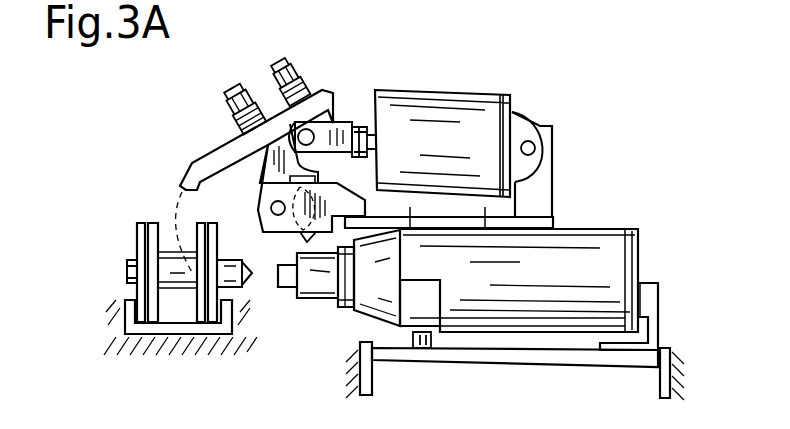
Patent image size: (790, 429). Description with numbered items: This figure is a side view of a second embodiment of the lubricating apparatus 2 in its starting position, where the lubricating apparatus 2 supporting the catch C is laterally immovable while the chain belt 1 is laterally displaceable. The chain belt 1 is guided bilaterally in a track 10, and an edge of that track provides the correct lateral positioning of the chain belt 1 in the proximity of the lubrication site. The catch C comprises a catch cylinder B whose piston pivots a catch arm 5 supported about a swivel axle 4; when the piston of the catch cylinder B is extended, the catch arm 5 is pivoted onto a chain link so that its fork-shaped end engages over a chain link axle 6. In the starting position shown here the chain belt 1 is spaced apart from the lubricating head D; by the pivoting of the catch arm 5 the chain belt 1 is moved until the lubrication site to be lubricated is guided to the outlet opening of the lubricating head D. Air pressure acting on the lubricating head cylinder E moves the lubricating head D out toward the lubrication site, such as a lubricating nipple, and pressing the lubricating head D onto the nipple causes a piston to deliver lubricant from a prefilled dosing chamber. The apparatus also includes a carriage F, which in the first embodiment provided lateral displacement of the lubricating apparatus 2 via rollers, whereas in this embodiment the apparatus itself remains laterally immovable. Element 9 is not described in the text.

The chain belt 1 is at (110, 240).
The lubricating apparatus 2 is at (484, 285).
The swivel axle 4 is at (272, 206).
The catch arm 5 is at (230, 148).
The chain link axle 6 is at (168, 283).
The bracket 9 is at (227, 313).
The track 10 is at (196, 328).
The catch cylinder B is at (457, 103).
The catch C is at (190, 134).
The lubricating head D is at (327, 297).
The lubricating head cylinder E is at (620, 262).
The carriage F is at (652, 318).